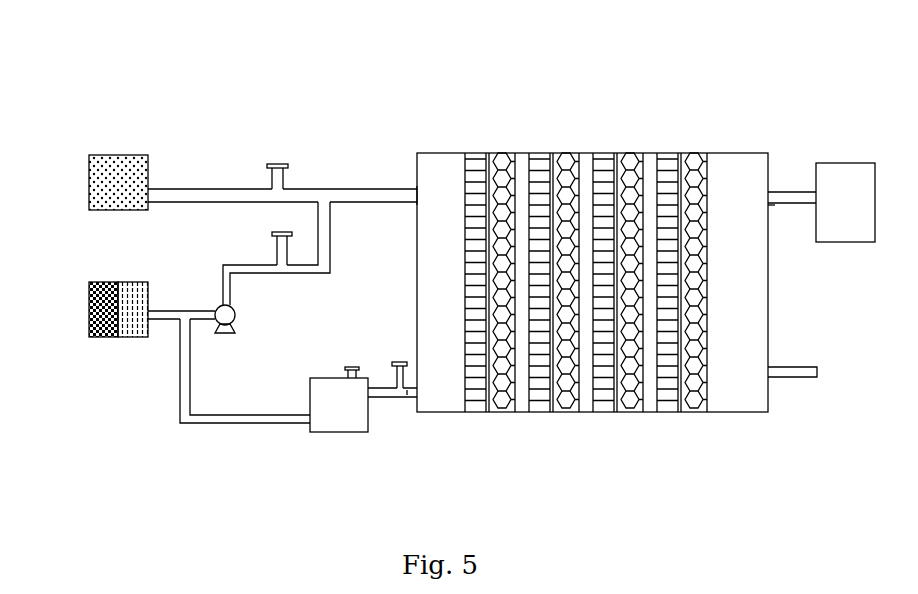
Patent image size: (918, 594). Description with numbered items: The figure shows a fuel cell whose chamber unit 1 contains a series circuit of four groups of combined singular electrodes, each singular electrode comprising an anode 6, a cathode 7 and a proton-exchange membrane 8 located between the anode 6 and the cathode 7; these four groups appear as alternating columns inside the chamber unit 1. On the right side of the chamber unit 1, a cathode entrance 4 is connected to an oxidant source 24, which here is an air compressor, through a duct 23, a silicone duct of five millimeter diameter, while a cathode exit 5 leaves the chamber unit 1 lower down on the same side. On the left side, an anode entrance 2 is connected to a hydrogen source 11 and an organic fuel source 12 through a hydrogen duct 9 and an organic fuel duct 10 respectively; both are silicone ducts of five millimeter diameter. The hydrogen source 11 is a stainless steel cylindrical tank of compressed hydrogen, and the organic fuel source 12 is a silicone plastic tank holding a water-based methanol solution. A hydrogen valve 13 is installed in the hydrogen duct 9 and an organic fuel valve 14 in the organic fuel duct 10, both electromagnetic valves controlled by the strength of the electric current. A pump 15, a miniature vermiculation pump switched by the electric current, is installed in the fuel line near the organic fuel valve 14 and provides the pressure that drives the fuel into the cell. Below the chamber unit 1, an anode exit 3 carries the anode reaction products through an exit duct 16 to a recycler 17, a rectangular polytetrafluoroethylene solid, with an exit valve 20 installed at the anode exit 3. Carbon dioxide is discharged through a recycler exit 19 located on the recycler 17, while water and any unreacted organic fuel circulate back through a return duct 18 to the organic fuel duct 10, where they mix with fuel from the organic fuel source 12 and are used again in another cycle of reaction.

The chamber unit 1 is at (752, 173).
The anode entrance 2 is at (415, 188).
The anode exit 3 is at (410, 383).
The cathode entrance 4 is at (770, 206).
The cathode exit 5 is at (770, 369).
The anode 6 is at (473, 153).
The cathode 7 is at (510, 153).
The proton-exchange membrane 8 is at (478, 153).
The hydrogen duct 9 is at (212, 188).
The organic fuel duct 10 is at (180, 307).
The hydrogen source 11 is at (88, 178).
The organic fuel source 12 is at (97, 282).
The hydrogen valve 13 is at (278, 165).
The organic fuel valve 14 is at (280, 233).
The pump 15 is at (233, 317).
The exit duct 16 is at (380, 398).
The recycler 17 is at (338, 435).
The return duct 18 is at (178, 423).
The recycler exit 19 is at (352, 367).
The exit valve 20 is at (407, 382).
The duct 23 is at (783, 192).
The oxidant source 24 is at (824, 163).